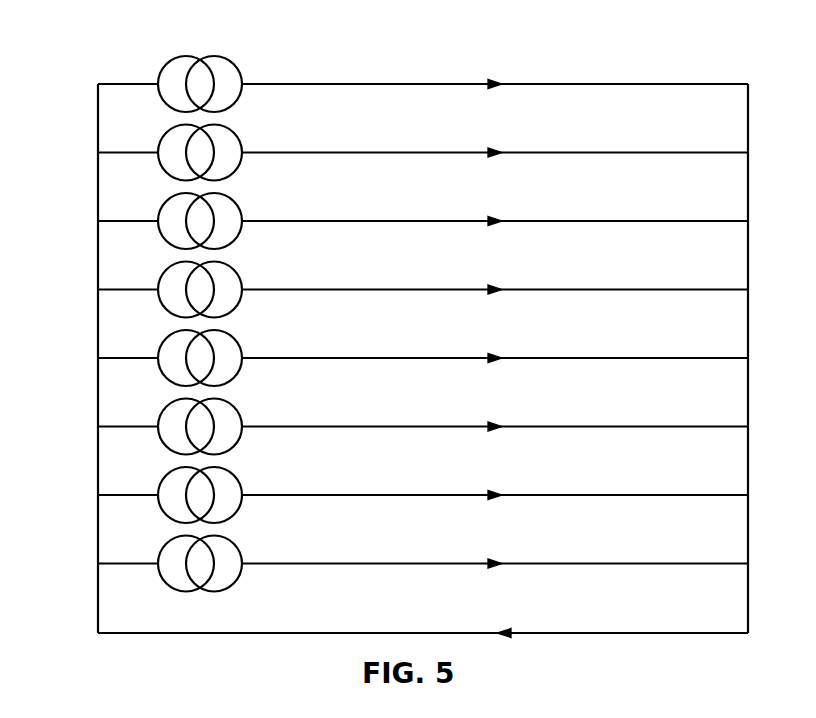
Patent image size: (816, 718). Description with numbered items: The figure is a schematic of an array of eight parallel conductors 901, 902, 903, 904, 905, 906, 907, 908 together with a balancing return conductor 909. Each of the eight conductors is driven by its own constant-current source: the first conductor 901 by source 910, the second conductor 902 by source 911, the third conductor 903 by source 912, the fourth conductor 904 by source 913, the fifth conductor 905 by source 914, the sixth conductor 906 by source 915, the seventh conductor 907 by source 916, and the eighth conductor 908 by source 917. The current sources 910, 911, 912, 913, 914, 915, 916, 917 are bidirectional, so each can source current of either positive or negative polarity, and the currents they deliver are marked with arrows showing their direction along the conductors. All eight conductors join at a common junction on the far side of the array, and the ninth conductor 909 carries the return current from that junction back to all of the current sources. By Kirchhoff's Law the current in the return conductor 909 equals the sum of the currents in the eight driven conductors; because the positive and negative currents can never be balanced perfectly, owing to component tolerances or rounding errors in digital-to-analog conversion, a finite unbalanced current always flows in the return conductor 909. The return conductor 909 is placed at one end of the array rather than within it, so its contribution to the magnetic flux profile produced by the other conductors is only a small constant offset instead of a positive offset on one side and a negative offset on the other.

The parallel conductor 901 is at (456, 71).
The parallel conductor 902 is at (456, 140).
The parallel conductor 903 is at (456, 208).
The parallel conductor 904 is at (456, 276).
The parallel conductor 905 is at (456, 345).
The parallel conductor 906 is at (456, 414).
The parallel conductor 907 is at (456, 482).
The parallel conductor 908 is at (456, 550).
The balancing return conductor 909 is at (456, 617).
The constant-current source 910 is at (139, 68).
The constant-current source 911 is at (139, 136).
The constant-current source 912 is at (139, 205).
The constant-current source 913 is at (139, 274).
The constant-current source 914 is at (139, 342).
The constant-current source 915 is at (139, 410).
The constant-current source 916 is at (139, 479).
The constant-current source 917 is at (139, 548).